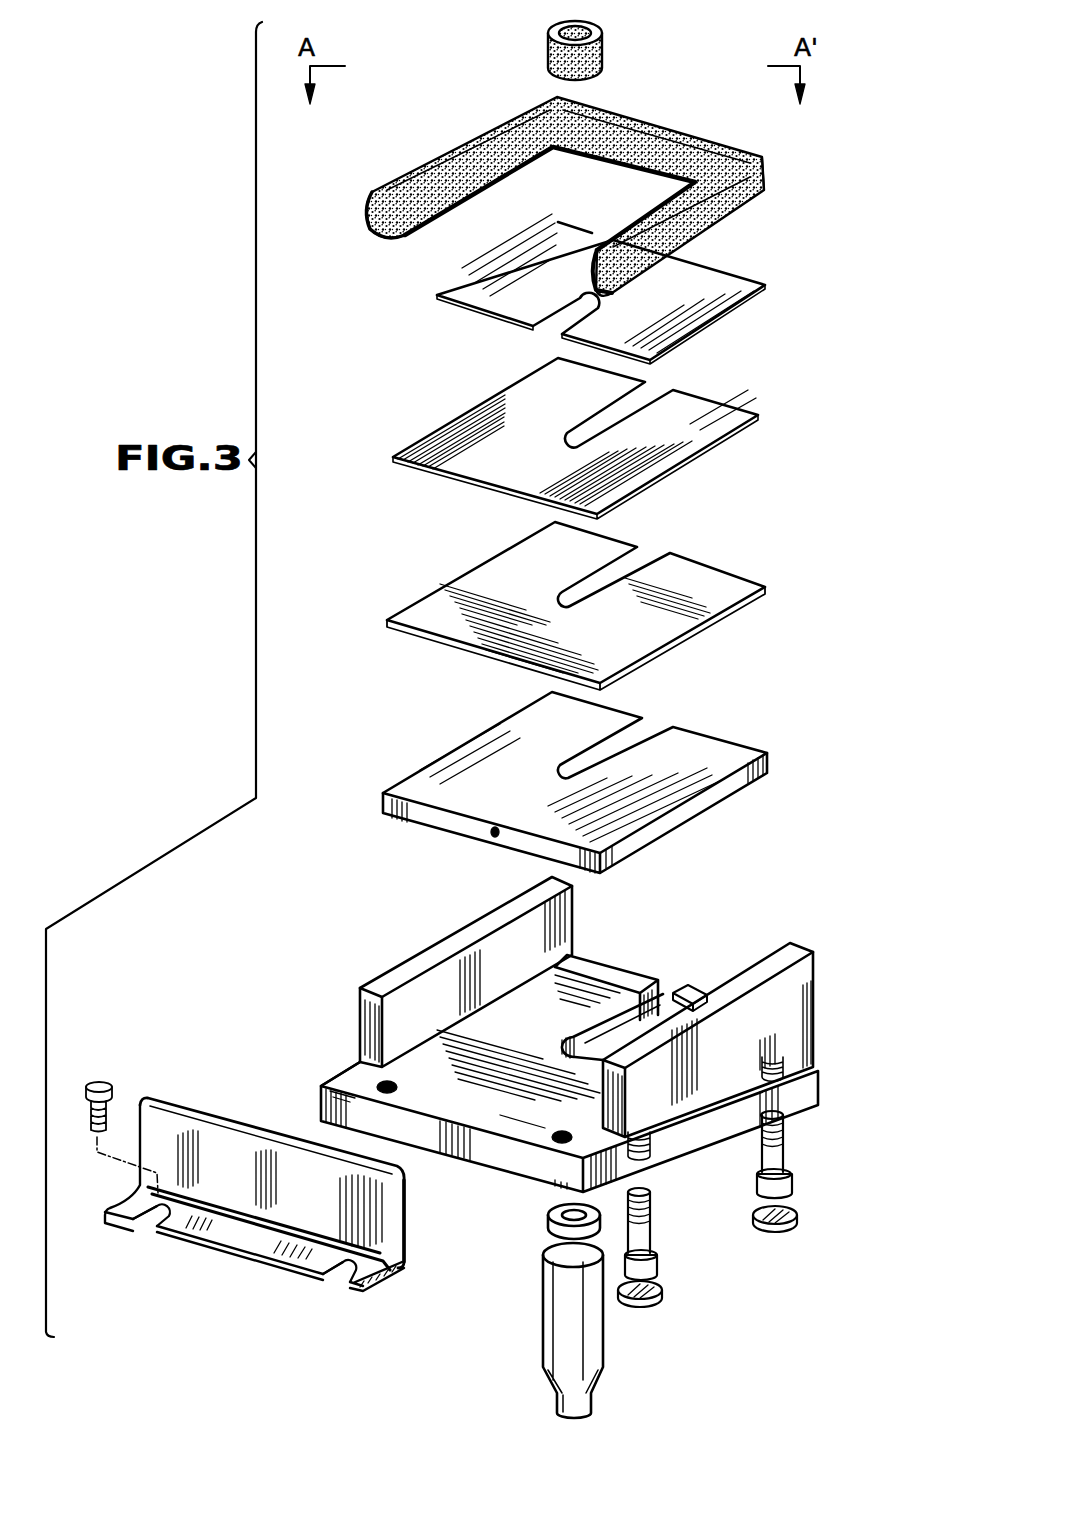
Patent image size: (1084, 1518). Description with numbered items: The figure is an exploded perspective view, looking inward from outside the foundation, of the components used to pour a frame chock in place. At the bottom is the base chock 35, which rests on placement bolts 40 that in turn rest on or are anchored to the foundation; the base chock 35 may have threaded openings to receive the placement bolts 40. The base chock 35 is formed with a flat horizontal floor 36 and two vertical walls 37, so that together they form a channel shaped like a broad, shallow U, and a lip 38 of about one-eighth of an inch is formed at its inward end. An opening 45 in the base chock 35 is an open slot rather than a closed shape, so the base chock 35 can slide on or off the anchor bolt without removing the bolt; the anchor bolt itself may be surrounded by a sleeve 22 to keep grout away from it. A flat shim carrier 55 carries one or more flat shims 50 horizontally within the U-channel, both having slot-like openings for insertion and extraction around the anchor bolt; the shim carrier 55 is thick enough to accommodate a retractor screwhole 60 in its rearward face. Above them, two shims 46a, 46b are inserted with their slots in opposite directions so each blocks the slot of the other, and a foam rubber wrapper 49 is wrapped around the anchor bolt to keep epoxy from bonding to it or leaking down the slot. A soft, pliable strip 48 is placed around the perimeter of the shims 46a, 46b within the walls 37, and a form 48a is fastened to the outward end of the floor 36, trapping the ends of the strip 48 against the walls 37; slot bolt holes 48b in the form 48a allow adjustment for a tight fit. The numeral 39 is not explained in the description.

The sleeve 22 is at (603, 1340).
The base chock 35 is at (528, 1129).
The floor 36 is at (517, 1122).
The vertical walls 37 is at (400, 962).
The lip 38 is at (615, 963).
The base block 39 is at (340, 1074).
The placement bolts 40 is at (648, 1227).
The opening 45 is at (670, 998).
The shim 46a is at (752, 280).
The shim 46b is at (743, 413).
The strip 48 is at (762, 185).
The form 48a is at (251, 1222).
The slot bolt holes 48b is at (332, 1293).
The wrapper 49 is at (603, 55).
The flat shims 50 is at (738, 580).
The shim carrier 55 is at (592, 789).
The retractor screwhole 60 is at (492, 838).